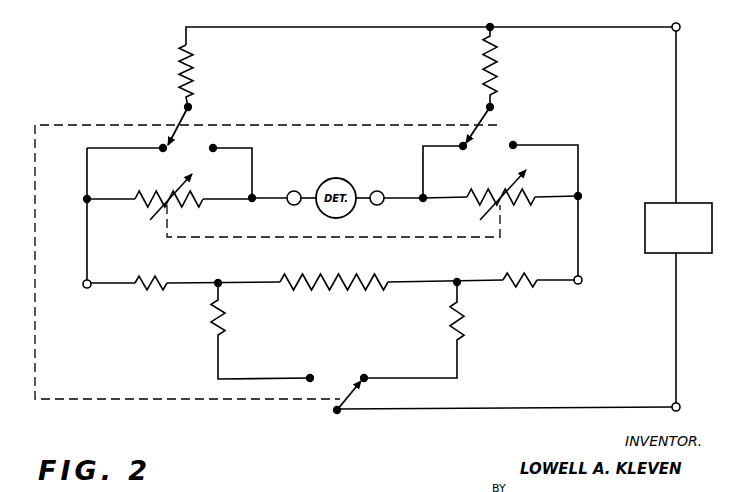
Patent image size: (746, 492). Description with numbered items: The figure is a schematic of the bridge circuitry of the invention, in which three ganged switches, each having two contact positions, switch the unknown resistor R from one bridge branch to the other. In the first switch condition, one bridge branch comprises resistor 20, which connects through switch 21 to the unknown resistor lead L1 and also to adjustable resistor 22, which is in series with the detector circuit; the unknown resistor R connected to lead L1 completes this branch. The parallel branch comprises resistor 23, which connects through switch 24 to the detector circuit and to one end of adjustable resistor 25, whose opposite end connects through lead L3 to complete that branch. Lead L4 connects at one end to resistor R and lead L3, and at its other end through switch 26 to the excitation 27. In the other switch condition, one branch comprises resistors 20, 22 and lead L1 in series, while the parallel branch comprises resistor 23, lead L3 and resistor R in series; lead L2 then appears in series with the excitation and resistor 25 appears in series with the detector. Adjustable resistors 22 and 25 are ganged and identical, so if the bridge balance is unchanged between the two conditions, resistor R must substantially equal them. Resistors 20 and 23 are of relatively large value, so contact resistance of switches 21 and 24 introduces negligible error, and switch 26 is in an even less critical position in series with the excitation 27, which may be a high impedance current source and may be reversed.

The resistor 20 is at (178, 68).
The switch 21 is at (177, 118).
The adjustable resistor 22 is at (150, 188).
The resistor 23 is at (505, 78).
The switch 24 is at (500, 126).
The adjustable resistor 25 is at (488, 190).
The switch 26 is at (333, 411).
The excitation 27 is at (700, 203).
The unknown resistor R is at (298, 280).
The unknown resistor lead L1 is at (145, 295).
The lead L2 is at (213, 338).
The lead L3 is at (512, 298).
The lead L4 is at (450, 338).